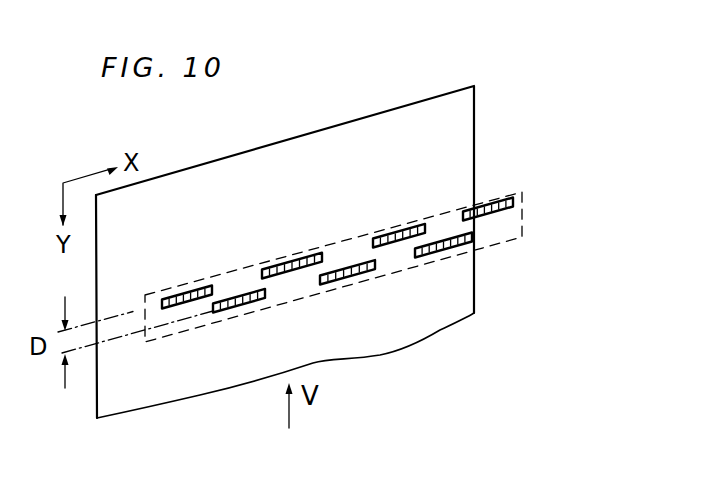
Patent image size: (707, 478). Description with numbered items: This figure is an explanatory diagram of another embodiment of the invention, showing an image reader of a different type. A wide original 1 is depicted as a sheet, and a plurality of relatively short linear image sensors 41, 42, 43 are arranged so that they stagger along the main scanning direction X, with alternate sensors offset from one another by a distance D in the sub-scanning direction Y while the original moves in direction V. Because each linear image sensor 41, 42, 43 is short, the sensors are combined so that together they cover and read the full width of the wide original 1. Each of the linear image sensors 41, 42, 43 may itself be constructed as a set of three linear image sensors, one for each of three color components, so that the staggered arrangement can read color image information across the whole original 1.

The original 1 is at (476, 143).
The linear image sensor 41 is at (184, 292).
The linear image sensor 42 is at (239, 297).
The linear image sensor 43 is at (290, 268).